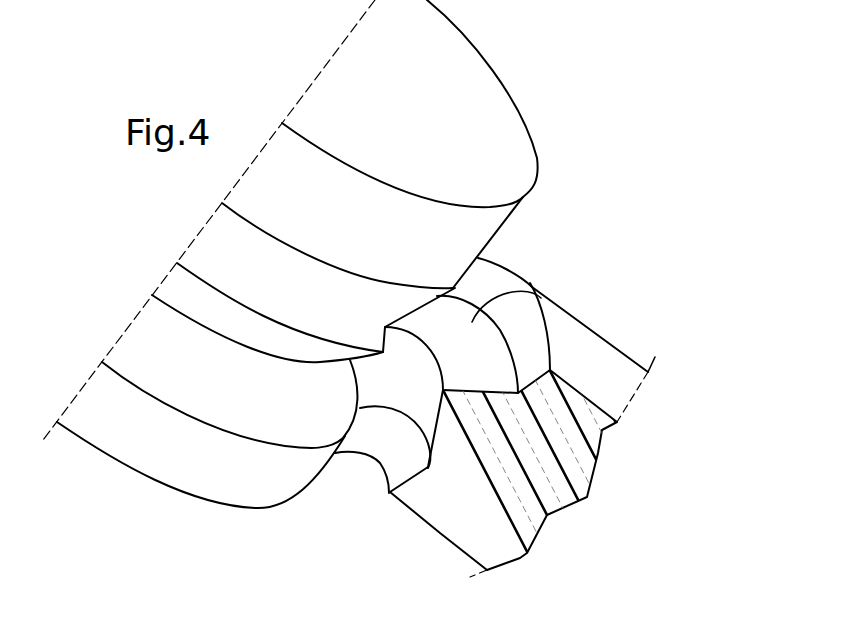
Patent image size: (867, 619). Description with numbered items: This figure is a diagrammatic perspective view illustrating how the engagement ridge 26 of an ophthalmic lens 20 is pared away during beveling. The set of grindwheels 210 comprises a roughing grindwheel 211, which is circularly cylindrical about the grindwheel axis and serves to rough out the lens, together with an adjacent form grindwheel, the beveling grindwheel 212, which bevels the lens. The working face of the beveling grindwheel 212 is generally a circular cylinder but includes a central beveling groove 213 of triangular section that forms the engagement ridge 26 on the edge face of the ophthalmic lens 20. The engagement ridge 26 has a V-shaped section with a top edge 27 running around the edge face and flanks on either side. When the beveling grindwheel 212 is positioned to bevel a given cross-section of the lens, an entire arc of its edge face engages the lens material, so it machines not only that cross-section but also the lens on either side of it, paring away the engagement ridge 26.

The set of grindwheels 210 is at (506, 80).
The roughing grindwheel 211 is at (508, 215).
The beveling grindwheel 212 is at (273, 490).
The central beveling groove 213 is at (345, 417).
The top edge 27 is at (420, 357).
The engagement ridge 26 is at (535, 290).
The ophthalmic lens 20 is at (604, 334).